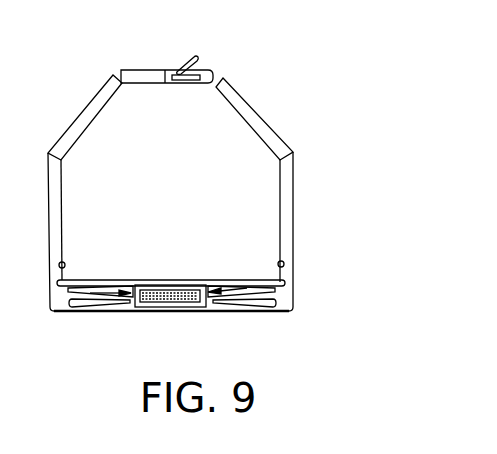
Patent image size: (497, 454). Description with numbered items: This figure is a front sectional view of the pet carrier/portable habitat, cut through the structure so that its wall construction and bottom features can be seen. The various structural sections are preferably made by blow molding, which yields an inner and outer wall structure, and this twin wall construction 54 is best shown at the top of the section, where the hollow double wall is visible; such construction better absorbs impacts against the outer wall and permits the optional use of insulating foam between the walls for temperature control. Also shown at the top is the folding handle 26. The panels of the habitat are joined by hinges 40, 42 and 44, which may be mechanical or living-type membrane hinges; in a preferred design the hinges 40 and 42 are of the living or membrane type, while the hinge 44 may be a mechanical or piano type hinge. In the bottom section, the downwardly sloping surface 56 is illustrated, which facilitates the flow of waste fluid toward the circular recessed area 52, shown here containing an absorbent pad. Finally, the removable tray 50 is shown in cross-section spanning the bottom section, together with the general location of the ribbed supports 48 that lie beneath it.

The folding handle 26 is at (193, 62).
The hinge 40 is at (222, 74).
The hinge 42 is at (293, 156).
The hinge 44 is at (285, 263).
The ribbed supports 48 is at (223, 280).
The removable tray 50 is at (134, 284).
The circular recessed area 52 is at (163, 302).
The twin wall construction 54 is at (148, 76).
The downwardly sloping surface 56 is at (103, 306).